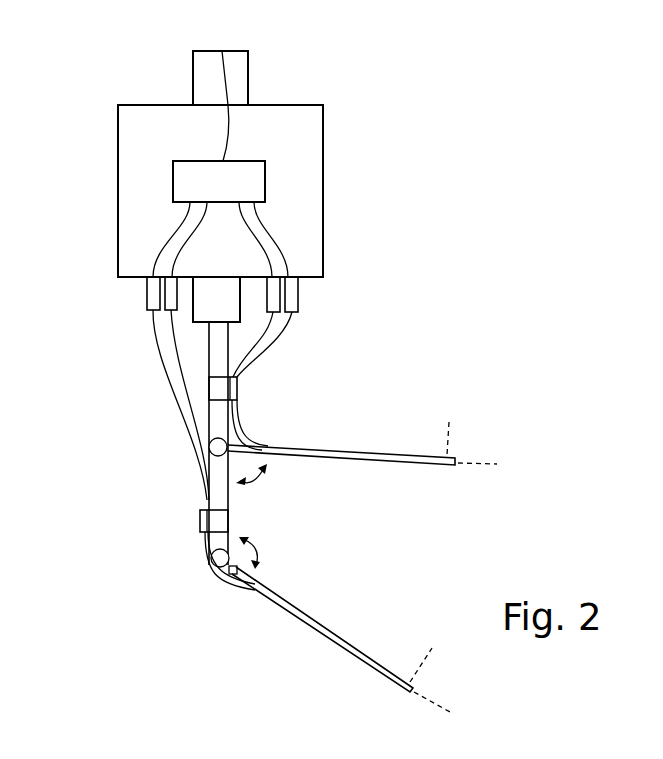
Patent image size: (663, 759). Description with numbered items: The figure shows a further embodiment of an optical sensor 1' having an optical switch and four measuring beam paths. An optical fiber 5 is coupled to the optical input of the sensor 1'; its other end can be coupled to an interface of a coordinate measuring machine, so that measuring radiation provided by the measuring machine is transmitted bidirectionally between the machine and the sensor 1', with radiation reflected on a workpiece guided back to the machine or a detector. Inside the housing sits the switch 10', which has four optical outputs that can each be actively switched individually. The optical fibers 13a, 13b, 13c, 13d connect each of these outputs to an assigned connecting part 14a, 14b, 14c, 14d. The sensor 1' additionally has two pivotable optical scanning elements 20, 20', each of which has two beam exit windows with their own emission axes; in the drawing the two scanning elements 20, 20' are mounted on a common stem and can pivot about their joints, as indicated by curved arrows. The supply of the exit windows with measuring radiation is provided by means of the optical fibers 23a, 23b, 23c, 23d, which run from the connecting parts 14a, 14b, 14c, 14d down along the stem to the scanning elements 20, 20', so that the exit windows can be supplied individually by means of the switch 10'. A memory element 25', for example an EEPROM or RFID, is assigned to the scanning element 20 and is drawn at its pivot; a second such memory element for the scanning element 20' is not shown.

The optical sensor 1' is at (250, 150).
The optical fiber 5 is at (223, 72).
The switch 10' is at (295, 151).
The optical fiber 13a is at (242, 211).
The optical fiber 13b is at (275, 237).
The optical fiber 13c is at (188, 210).
The optical fiber 13d is at (178, 235).
The connecting part 14a is at (272, 302).
The connecting part 14b is at (290, 303).
The connecting part 14c is at (149, 295).
The connecting part 14d is at (169, 304).
The optical fiber 23a is at (242, 362).
The optical fiber 23b is at (255, 350).
The optical fiber 23c is at (162, 372).
The optical fiber 23d is at (183, 390).
The pivotable optical scanning element 20 is at (341, 639).
The pivotable optical scanning element 20' is at (362, 460).
The memory element 25' is at (170, 590).